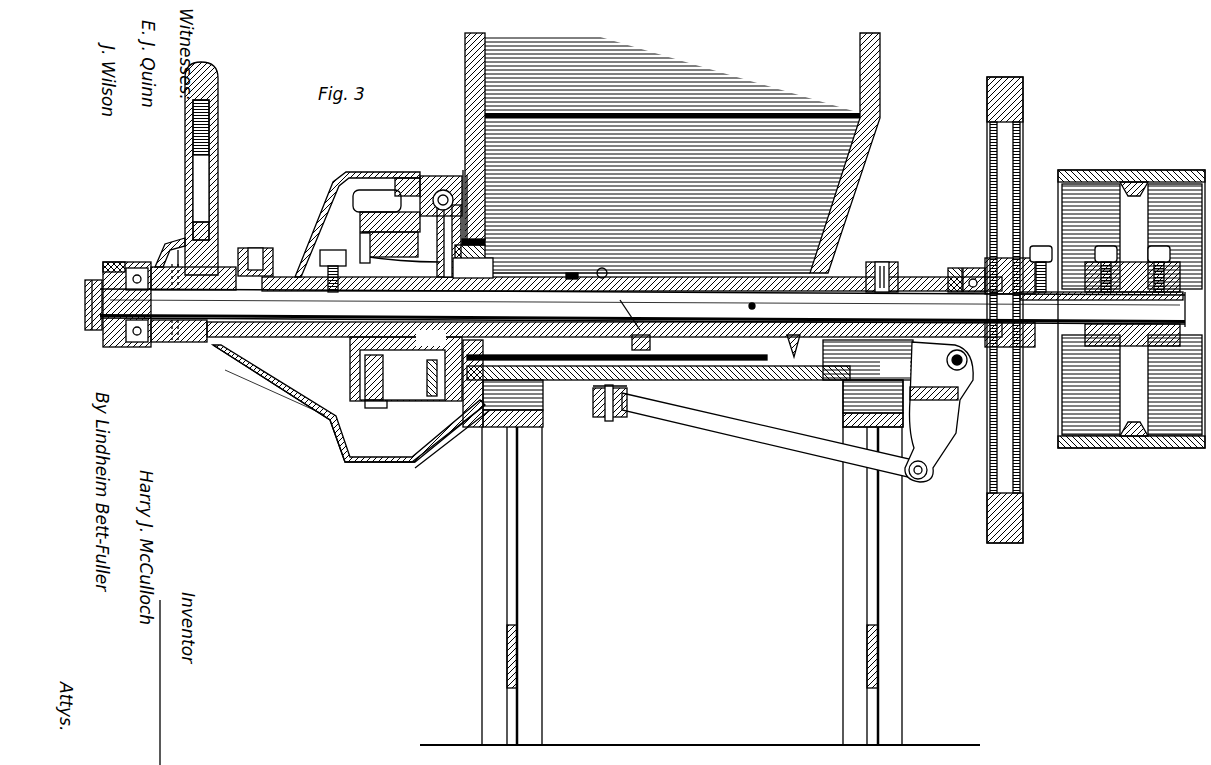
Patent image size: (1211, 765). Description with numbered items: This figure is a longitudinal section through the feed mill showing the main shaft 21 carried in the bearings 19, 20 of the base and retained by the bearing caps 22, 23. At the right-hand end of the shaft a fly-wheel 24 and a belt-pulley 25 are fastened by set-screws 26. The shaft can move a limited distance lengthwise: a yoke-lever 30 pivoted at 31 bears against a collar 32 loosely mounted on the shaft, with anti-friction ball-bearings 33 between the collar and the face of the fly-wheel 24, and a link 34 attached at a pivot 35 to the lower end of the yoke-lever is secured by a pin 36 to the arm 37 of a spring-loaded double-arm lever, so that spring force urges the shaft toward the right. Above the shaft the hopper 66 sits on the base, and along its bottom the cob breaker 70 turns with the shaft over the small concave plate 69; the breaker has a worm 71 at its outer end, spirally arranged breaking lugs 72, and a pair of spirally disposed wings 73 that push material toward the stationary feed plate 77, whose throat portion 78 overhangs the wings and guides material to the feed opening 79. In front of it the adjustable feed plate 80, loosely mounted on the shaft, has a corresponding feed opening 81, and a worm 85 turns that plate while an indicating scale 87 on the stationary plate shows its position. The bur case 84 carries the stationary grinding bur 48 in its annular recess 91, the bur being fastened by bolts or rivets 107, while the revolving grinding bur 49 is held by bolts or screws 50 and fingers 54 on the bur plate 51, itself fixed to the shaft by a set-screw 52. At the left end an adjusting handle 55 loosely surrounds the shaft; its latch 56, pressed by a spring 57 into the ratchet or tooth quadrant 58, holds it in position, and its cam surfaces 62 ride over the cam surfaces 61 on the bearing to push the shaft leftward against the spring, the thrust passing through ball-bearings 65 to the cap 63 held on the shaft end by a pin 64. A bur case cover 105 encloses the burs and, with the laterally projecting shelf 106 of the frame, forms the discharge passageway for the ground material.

The bearing 19 is at (205, 342).
The bearing 20 is at (906, 340).
The main shaft 21 is at (282, 302).
The bearing cap 22 is at (258, 248).
The bearing cap 23 is at (870, 262).
The fly-wheel 24 is at (1025, 112).
The belt-pulley 25 is at (1132, 178).
The set-screws 26 is at (1040, 246).
The yoke-lever 30 is at (932, 437).
The pivot 31 is at (961, 372).
The collar 32 is at (968, 278).
The anti-friction ball-bearings 33 is at (956, 266).
The link 34 is at (722, 422).
The pivot 35 is at (922, 478).
The pin 36 is at (612, 421).
The arm 37 is at (630, 393).
The stationary grinding bur 48 is at (382, 230).
The revolving grinding bur 49 is at (372, 212).
The bolts or screws 50 is at (335, 204).
The bur plate 51 is at (330, 418).
The set-screw 52 is at (326, 250).
The fingers 54 is at (365, 236).
The adjusting handle 55 is at (218, 78).
The latch 56 is at (209, 185).
The spring 57 is at (209, 152).
The ratchet or tooth quadrant 58 is at (210, 238).
The cam surfaces 61 is at (176, 250).
The cam surfaces 62 is at (170, 246).
The cap 63 is at (103, 340).
The pin 64 is at (85, 302).
The ball-bearings 65 is at (118, 264).
The hopper 66 is at (872, 70).
The small concave plate 69 is at (580, 382).
The cob breaker 70 is at (715, 282).
The worm 71 is at (787, 342).
The breaking members or lugs 72 is at (580, 276).
The spirally disposed wings 73 is at (650, 345).
The stationary feed plate 77 is at (486, 236).
The throat portion 78 is at (478, 268).
The feed opening 79 is at (445, 430).
The adjustable feed plate 80 is at (406, 364).
The feed opening 81 is at (488, 250).
The bur case 84 is at (448, 200).
The worm 85 is at (472, 196).
The indicating scale 87 is at (470, 185).
The annular recess 91 is at (440, 190).
The bur case cover 105 is at (362, 192).
The shelf 106 is at (435, 462).
The bolts or rivets 107 is at (406, 180).